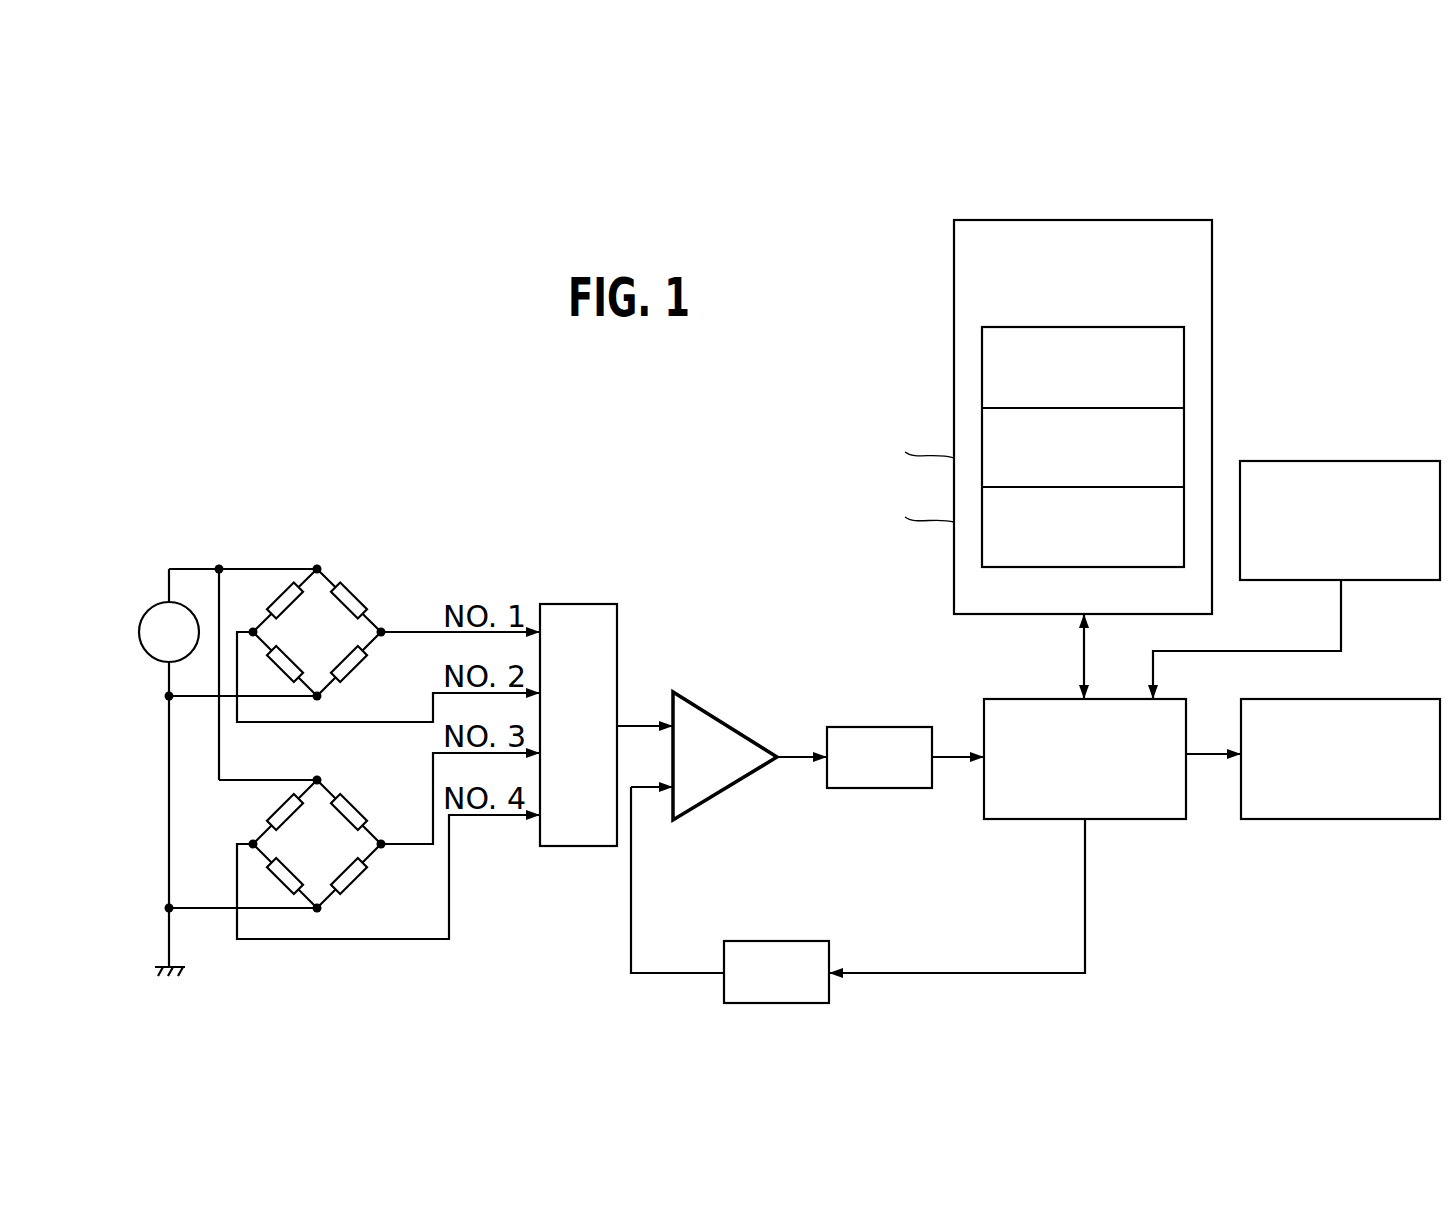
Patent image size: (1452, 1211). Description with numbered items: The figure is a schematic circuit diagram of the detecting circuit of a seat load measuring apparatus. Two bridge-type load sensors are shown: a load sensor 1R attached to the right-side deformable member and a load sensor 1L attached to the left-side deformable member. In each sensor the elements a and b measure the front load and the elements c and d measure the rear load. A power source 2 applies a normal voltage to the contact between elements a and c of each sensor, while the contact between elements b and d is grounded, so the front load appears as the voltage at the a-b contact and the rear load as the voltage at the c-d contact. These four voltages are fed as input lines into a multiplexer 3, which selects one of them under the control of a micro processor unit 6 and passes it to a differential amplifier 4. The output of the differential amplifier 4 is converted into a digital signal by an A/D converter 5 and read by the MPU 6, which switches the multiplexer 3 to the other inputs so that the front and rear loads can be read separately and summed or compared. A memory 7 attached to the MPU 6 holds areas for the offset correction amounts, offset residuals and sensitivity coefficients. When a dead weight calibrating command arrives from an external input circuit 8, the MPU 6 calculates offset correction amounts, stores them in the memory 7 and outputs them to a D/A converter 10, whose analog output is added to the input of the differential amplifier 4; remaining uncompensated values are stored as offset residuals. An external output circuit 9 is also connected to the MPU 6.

The load sensor 1R is at (327, 578).
The load sensor 1L is at (327, 788).
The power source 2 is at (163, 603).
The multiplexer 3 is at (560, 604).
The differential amplifier 4 is at (730, 718).
The A/D converter 5 is at (855, 727).
The micro processor unit (MPU) 6 is at (1020, 819).
The memory 7 is at (1212, 297).
The external input circuit 8 is at (1341, 461).
The external output circuit 9 is at (1313, 819).
The D/A converter 10 is at (748, 941).